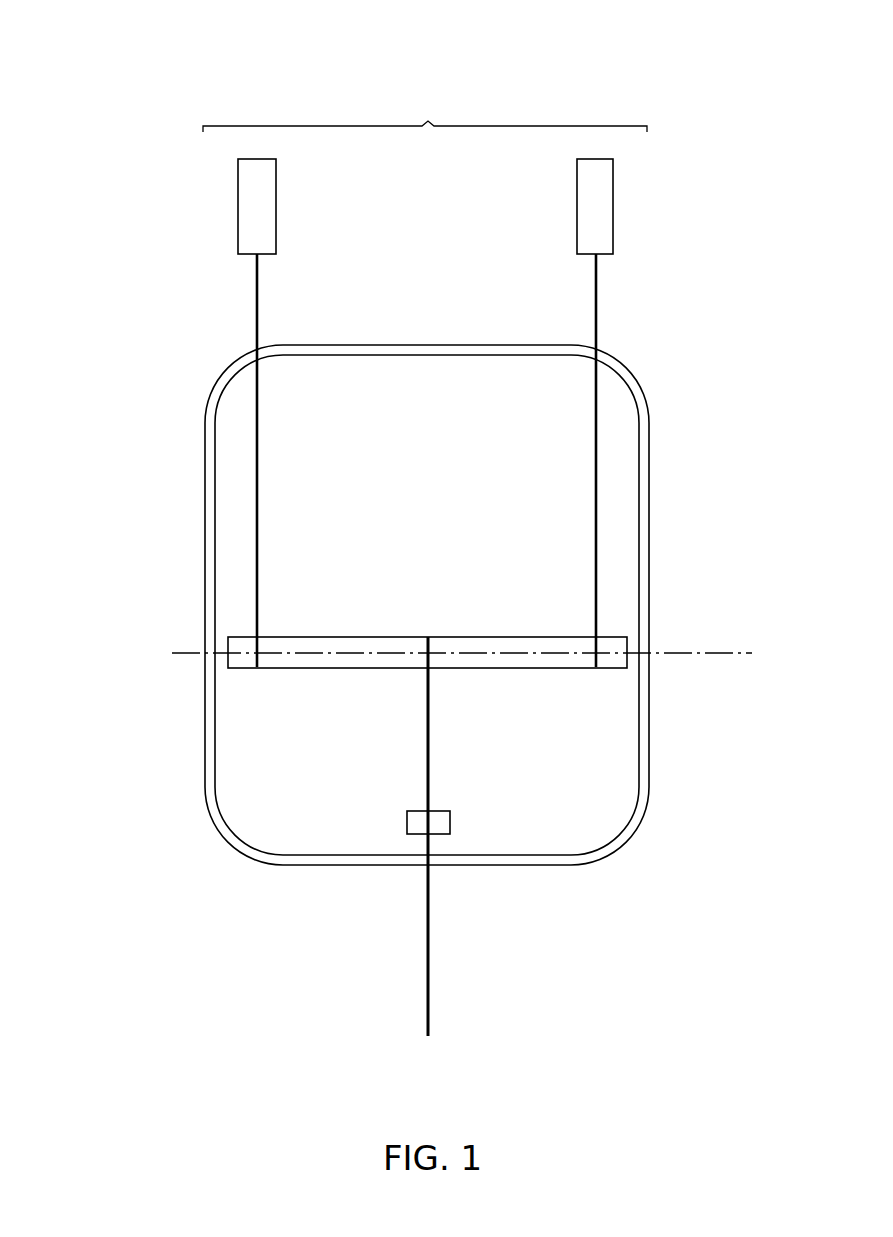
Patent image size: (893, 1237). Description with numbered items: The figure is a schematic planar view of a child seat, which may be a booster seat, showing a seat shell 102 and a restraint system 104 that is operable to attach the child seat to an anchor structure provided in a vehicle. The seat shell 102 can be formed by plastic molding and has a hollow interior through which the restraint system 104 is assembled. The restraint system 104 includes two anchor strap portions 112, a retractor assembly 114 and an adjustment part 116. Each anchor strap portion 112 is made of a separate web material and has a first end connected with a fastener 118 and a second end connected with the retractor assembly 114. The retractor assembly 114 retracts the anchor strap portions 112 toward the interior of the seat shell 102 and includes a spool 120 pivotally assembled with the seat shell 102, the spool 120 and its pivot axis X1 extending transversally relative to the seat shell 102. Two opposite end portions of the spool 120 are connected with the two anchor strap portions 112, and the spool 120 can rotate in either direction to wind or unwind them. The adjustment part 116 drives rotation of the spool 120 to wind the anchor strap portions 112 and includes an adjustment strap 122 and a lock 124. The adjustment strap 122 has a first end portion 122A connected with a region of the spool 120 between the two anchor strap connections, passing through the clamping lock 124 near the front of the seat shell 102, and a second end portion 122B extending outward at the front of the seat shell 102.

The seat shell 102 is at (643, 795).
The restraint system 104 is at (425, 115).
The anchor strap portions 112 is at (255, 312).
The retractor assembly 114 is at (247, 671).
The adjustment part 116 is at (421, 868).
The fastener 118 is at (243, 215).
The spool 120 is at (492, 669).
The adjustment strap 122 is at (432, 960).
The first end portion 122A is at (415, 671).
The second end portion 122B is at (438, 1033).
The lock 124 is at (452, 826).
The pivot axis X1 is at (712, 652).